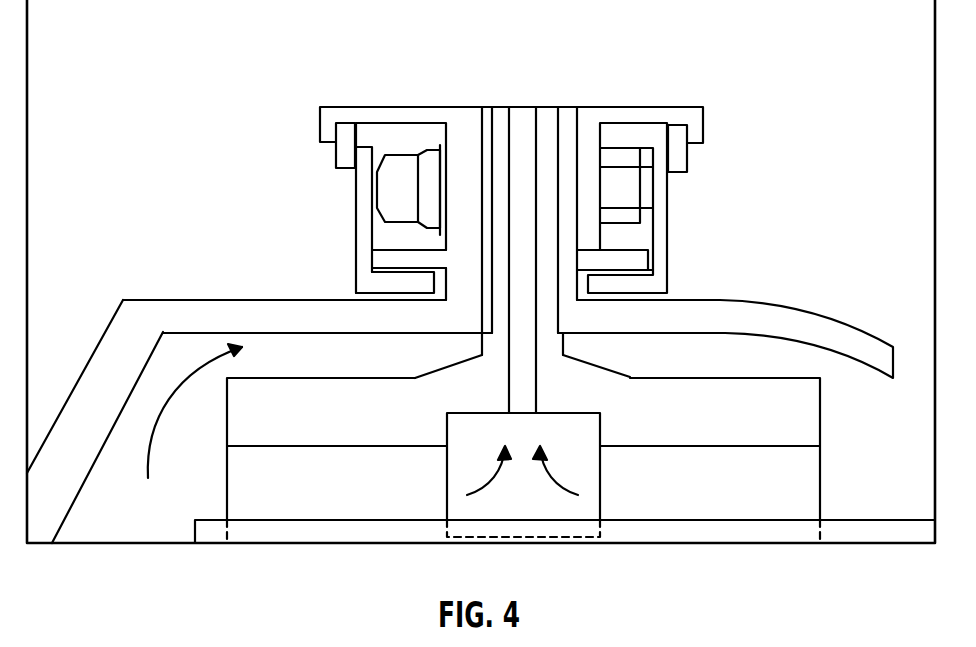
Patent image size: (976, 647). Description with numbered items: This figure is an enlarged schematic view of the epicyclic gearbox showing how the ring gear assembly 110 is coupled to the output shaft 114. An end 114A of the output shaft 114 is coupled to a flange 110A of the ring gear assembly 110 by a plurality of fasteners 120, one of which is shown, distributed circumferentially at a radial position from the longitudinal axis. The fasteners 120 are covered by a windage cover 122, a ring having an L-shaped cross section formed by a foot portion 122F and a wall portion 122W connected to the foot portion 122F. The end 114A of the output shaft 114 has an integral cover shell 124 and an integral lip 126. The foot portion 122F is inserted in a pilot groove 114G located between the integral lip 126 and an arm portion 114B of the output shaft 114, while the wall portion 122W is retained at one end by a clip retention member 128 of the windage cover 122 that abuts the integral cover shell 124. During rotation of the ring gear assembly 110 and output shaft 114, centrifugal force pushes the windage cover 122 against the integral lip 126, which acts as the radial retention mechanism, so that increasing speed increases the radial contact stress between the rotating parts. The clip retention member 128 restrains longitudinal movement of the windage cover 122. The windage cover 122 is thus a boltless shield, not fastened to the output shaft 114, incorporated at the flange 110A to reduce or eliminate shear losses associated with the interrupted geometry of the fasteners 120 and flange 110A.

The ring gear assembly 110 is at (800, 430).
The flange 110A is at (522, 372).
The output shaft 114 is at (80, 383).
The end of the output shaft 114A is at (463, 127).
The arm portion 114B is at (145, 320).
The pilot groove 114G is at (440, 288).
The fasteners 120 is at (627, 150).
The windage cover 122 is at (362, 140).
The wall portion 122W is at (363, 203).
The foot portion 122F is at (385, 285).
The integral cover shell 124 is at (683, 106).
The integral lip 126 is at (390, 257).
The clip retention member 128 is at (345, 128).